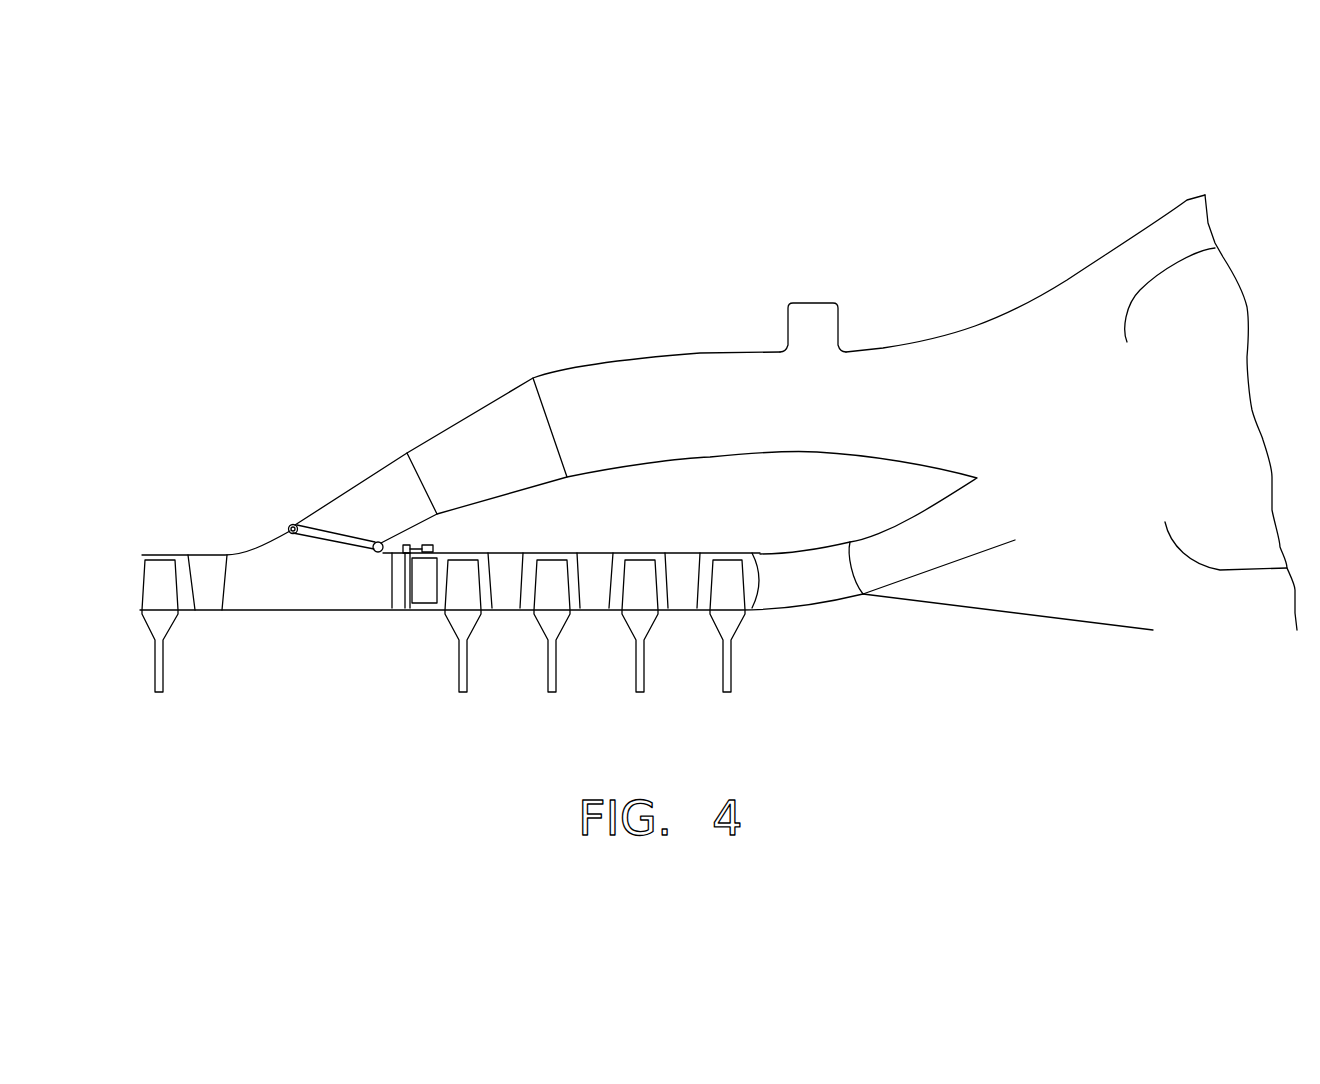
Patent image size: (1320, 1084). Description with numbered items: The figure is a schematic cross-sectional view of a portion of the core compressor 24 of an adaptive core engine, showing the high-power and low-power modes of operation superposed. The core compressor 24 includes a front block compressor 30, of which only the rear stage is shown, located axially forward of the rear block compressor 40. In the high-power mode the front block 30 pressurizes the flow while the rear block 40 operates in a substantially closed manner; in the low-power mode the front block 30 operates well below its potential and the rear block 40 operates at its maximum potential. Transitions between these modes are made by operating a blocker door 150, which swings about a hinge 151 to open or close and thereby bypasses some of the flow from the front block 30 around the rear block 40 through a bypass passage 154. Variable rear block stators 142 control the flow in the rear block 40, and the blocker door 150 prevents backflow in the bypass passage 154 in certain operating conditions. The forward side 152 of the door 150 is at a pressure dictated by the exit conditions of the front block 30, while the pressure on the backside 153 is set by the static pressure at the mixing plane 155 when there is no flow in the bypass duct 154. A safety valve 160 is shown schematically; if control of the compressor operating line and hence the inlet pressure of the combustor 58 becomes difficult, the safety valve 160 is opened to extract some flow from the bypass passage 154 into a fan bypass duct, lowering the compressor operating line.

The core compressor 24 is at (368, 752).
The front block compressor 30 is at (140, 685).
The rear block compressor 40 is at (530, 695).
The combustor 58 is at (1183, 370).
The rear block stators 142 is at (423, 586).
The blocker door 150 is at (323, 538).
The hinge 151 is at (291, 524).
The forward side 152 is at (341, 543).
The backside 153 is at (338, 531).
The bypass passage 154 is at (587, 387).
The mixing plane 155 is at (1018, 352).
The safety valve 160 is at (813, 317).